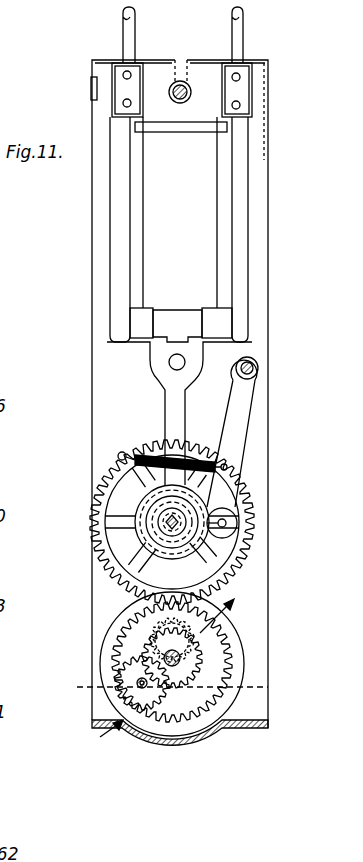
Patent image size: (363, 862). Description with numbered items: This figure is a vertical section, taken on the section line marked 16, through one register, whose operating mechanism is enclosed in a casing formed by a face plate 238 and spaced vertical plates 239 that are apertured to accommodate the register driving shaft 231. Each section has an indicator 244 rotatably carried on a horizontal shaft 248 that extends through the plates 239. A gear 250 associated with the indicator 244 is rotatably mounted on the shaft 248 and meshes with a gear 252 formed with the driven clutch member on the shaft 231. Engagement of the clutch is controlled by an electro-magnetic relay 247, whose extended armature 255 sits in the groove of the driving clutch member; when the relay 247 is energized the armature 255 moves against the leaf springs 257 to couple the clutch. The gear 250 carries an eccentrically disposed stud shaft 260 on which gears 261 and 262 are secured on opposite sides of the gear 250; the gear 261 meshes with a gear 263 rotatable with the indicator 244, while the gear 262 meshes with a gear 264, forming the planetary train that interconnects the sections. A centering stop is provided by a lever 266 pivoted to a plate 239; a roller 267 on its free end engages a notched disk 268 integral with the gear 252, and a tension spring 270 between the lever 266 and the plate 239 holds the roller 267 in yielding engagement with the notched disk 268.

The electro-magnetic relay 247 is at (163, 232).
The leaf springs 257 is at (112, 295).
The armature 255 is at (168, 402).
The tension spring 270 is at (153, 443).
The gear 252 is at (113, 470).
The notched disk 268 is at (140, 512).
The register driving shaft 231 is at (180, 518).
The lever 266 is at (233, 422).
The roller 267 is at (232, 537).
The vertical plates 239 is at (250, 567).
The section line 16 is at (179, 670).
The indicator 244 is at (110, 625).
The gear 250 is at (223, 638).
The gear 264 is at (180, 670).
The horizontal shaft 248 is at (158, 652).
The gear 262 is at (123, 682).
The gear 261 is at (113, 687).
The gear 263 is at (189, 690).
The stud shaft 260 is at (142, 690).
The face plate 238 is at (227, 728).